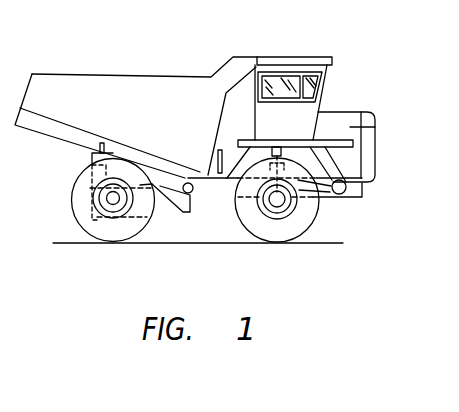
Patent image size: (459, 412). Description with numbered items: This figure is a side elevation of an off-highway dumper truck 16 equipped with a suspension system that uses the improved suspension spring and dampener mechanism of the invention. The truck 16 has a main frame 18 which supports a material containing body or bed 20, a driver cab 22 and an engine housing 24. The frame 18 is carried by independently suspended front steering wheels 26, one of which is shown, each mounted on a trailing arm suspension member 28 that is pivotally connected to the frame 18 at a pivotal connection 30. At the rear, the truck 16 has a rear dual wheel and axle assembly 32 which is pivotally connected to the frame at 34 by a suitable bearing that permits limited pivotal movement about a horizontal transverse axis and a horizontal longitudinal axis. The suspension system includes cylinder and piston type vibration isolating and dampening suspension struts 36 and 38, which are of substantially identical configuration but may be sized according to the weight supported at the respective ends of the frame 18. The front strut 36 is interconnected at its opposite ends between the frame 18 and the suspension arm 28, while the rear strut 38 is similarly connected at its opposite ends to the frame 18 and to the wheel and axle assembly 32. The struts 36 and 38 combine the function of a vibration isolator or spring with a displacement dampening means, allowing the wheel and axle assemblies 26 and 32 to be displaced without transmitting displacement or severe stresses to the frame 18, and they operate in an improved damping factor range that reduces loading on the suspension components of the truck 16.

The dumper truck 16 is at (309, 50).
The main frame 18 is at (220, 192).
The material containing body 20 is at (163, 85).
The driver cab 22 is at (328, 78).
The engine housing 24 is at (378, 125).
The front steering wheel 26 is at (307, 223).
The trailing arm suspension member 28 is at (333, 197).
The pivotal connection 30 is at (372, 182).
The rear dual wheel and axle assembly 32 is at (163, 208).
The pivotal connection 34 is at (188, 183).
The suspension strut 36 is at (297, 125).
The suspension strut 38 is at (92, 184).